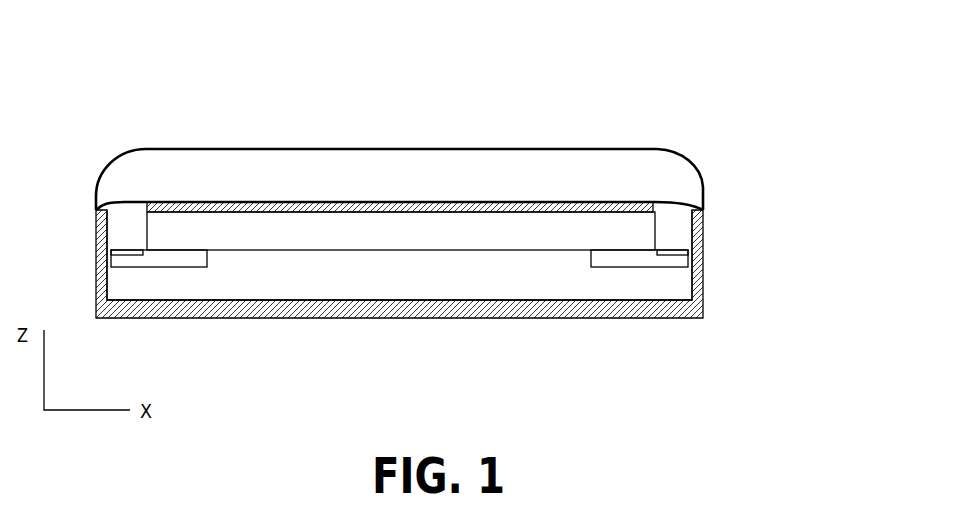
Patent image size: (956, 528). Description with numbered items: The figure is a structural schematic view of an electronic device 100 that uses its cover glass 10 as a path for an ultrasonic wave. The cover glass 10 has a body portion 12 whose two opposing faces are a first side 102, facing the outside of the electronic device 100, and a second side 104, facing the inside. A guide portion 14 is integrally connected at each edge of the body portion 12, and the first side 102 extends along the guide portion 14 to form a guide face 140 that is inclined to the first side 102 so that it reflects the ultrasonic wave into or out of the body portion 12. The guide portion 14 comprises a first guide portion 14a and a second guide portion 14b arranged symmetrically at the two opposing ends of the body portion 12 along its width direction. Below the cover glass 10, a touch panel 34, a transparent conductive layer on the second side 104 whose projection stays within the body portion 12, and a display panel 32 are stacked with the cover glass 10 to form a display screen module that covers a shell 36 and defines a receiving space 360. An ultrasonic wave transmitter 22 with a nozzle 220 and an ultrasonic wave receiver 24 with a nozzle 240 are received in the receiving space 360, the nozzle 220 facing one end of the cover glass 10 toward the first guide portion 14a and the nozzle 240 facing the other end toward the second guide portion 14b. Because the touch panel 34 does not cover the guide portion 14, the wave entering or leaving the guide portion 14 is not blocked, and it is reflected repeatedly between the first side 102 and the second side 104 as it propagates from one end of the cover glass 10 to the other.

The electronic device 100 is at (282, 65).
The cover glass 10 is at (822, 30).
The body portion 12 is at (662, 162).
The guide portion 14 is at (787, 25).
The first guide portion 14a is at (127, 177).
The second guide portion 14b is at (633, 195).
The first side 102 is at (192, 147).
The second side 104 is at (147, 206).
The guide face 140 is at (110, 172).
The ultrasonic wave transmitter 22 is at (163, 257).
The nozzle 220 is at (123, 252).
The ultrasonic wave receiver 24 is at (608, 258).
The nozzle 240 is at (677, 253).
The display panel 32 is at (383, 232).
The touch panel 34 is at (270, 212).
The shell 36 is at (490, 308).
The receiving space 360 is at (553, 277).